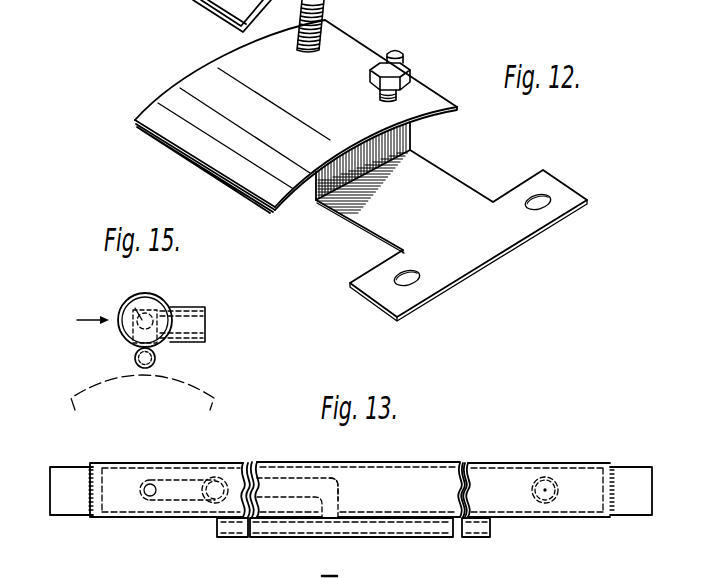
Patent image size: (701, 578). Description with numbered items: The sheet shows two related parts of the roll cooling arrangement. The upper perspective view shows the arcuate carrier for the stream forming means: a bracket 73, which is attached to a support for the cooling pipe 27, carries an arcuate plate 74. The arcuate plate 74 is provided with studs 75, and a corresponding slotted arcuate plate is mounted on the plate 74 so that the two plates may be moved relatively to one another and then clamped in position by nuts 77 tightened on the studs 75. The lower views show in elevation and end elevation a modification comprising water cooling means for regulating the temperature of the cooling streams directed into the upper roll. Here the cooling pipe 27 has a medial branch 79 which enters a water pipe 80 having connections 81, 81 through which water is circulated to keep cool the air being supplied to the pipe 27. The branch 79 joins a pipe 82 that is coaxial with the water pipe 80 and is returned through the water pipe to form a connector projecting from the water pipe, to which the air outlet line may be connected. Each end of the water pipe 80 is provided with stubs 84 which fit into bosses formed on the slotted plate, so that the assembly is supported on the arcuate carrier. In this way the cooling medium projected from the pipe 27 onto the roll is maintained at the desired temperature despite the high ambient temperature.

In FIG. 12, the bracket 73 is at (482, 245).
In FIG. 12, the arcuate plate 74 is at (172, 93).
In FIG. 12, the studs 75 is at (326, 13).
In FIG. 12, the nuts 77 is at (408, 72).
In FIG. 15, the medial branch 79 is at (157, 352).
In FIG. 13, the medial branch 79 is at (342, 490).
In FIG. 15, the water pipe 80 is at (122, 335).
In FIG. 13, the water pipe 80 is at (147, 462).
In FIG. 15, the connections 81 is at (188, 305).
In FIG. 13, the connections 81 is at (207, 513).
In FIG. 15, the pipe 82 is at (132, 293).
In FIG. 13, the pipe 82 is at (305, 478).
In FIG. 13, the stubs 84 is at (72, 503).
In FIG. 13, the cooling pipe 27 is at (302, 537).